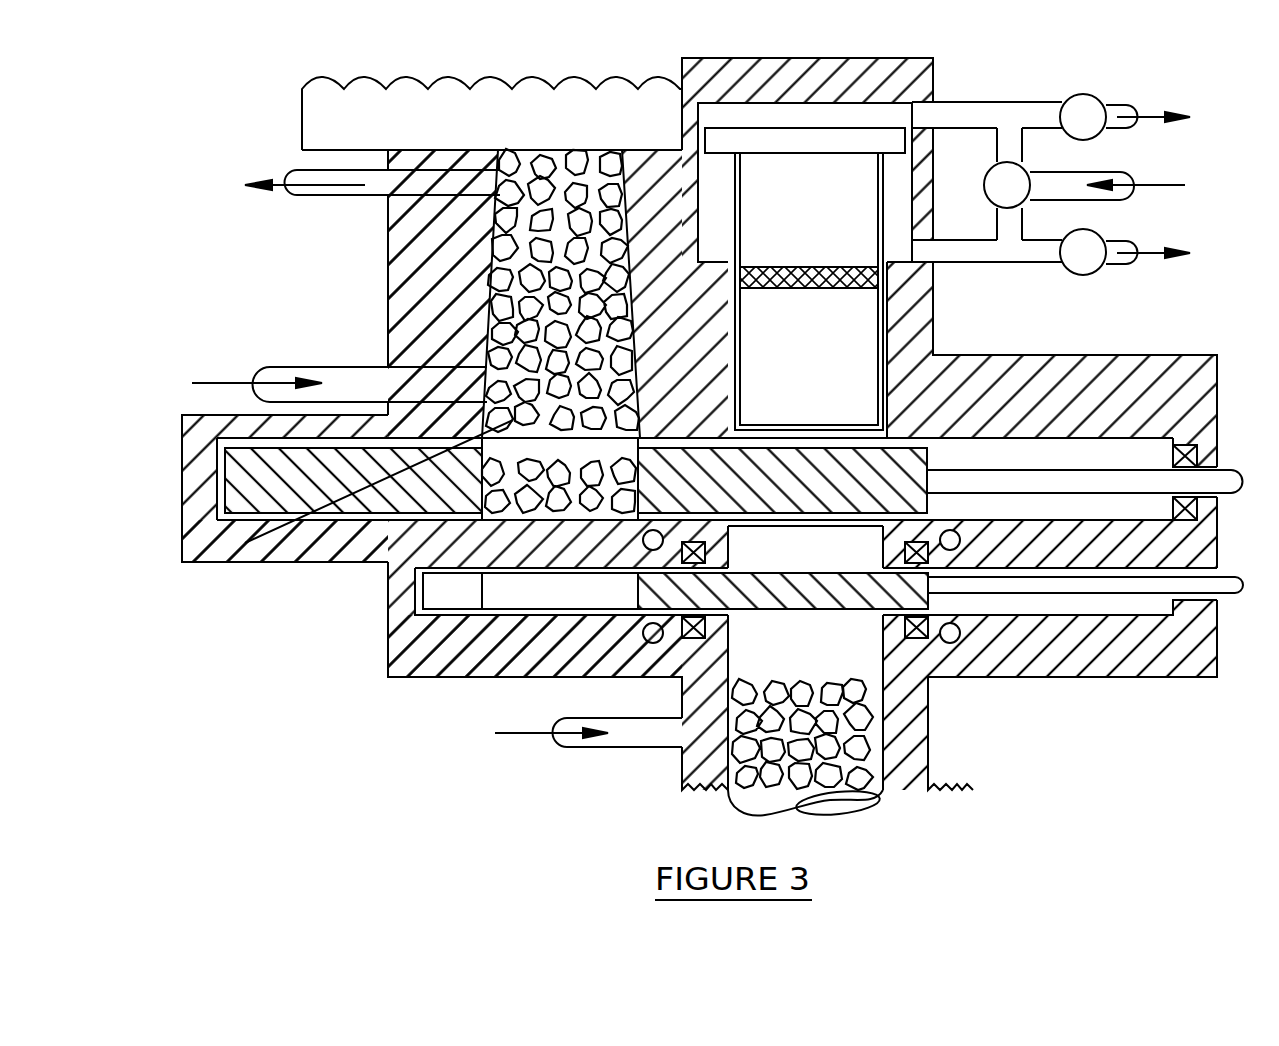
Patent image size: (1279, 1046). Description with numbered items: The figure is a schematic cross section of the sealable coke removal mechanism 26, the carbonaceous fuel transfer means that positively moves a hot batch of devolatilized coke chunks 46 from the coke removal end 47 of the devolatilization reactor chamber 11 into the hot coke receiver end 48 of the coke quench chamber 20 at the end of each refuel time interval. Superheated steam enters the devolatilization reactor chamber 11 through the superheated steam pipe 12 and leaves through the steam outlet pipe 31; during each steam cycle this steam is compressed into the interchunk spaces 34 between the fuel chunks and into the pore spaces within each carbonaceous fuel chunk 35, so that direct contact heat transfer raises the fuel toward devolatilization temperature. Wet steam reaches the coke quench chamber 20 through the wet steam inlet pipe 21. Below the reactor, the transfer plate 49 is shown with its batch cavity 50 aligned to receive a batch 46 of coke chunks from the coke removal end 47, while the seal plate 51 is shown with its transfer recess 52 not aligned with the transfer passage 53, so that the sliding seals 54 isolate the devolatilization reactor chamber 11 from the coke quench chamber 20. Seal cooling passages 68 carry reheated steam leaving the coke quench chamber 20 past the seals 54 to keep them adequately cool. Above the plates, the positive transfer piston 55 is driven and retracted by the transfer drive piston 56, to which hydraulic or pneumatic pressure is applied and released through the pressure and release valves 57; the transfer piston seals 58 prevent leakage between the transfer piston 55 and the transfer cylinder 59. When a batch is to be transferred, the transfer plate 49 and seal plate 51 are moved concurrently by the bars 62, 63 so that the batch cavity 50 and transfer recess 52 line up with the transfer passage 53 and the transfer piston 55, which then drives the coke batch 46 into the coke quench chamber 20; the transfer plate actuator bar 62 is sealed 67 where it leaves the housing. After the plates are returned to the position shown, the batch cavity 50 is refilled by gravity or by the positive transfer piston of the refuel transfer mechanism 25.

The devolatilization reactor chamber 11 is at (492, 273).
The superheated steam pipe 12 is at (255, 366).
The coke quench chamber 20 is at (830, 752).
The wet steam inlet pipe 21 is at (617, 748).
The refuel transfer mechanism 25 is at (323, 108).
The sealable coke removal mechanism 26 is at (385, 655).
The steam outlet pipe 31 is at (340, 197).
The interchunk spaces 34 is at (540, 318).
The carbonaceous fuel chunk 35 is at (510, 247).
The batch of devolatilized coke chunks 46 is at (410, 520).
The coke removal end 47 is at (237, 562).
The hot coke receiver end 48 is at (847, 695).
The transfer plate 49 is at (255, 490).
The batch cavity 50 is at (470, 508).
The seal plate 51 is at (607, 575).
The transfer recess 52 is at (520, 593).
The transfer passage 53 is at (795, 543).
The sliding seals 54 is at (652, 647).
The positive transfer piston 55 is at (838, 337).
The transfer drive piston 56 is at (743, 140).
The pressure and release valves 57 is at (1075, 230).
The transfer piston seals 58 is at (867, 275).
The transfer cylinder 59 is at (885, 352).
The actuator bar 62 is at (1077, 482).
The bar 63 is at (1123, 583).
The seal 67 is at (1170, 462).
The seal cooling passages 68 is at (643, 540).